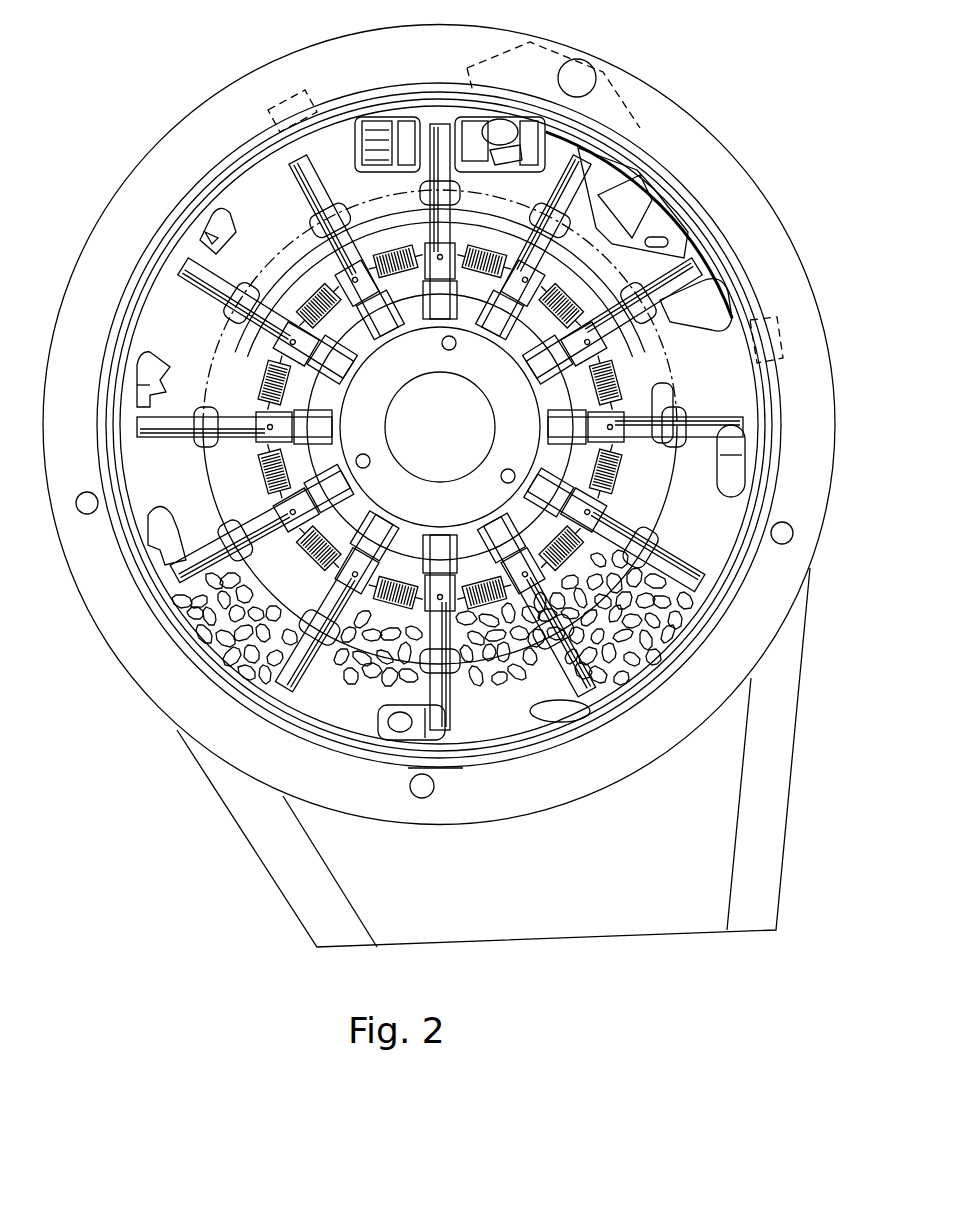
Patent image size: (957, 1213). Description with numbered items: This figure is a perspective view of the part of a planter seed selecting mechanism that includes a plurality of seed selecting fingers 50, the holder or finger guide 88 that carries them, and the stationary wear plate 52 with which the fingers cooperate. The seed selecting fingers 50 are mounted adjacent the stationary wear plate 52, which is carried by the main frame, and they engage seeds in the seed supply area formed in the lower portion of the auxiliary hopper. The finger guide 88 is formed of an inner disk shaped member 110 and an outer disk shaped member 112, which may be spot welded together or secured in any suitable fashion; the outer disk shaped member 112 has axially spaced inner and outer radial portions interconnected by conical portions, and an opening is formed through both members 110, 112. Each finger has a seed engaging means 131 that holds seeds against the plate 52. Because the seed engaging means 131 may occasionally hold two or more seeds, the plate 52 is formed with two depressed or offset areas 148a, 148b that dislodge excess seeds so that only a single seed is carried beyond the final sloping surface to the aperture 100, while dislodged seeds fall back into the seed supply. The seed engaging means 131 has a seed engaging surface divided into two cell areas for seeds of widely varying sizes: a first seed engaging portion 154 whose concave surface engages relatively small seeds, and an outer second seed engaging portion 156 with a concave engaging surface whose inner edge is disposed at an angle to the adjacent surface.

The seed selecting fingers 50 is at (718, 331).
The stationary wear plate 52 is at (258, 197).
The finger guide 88 is at (163, 675).
The aperture 100 is at (667, 227).
The inner disk shaped member 110 is at (596, 500).
The outer disk shaped member 112 is at (673, 397).
The seed engaging means 131 is at (727, 497).
The depressed area 148a is at (405, 127).
The depressed area 148b is at (527, 130).
The first seed engaging portion 154 is at (213, 227).
The second seed engaging portion 156 is at (137, 407).